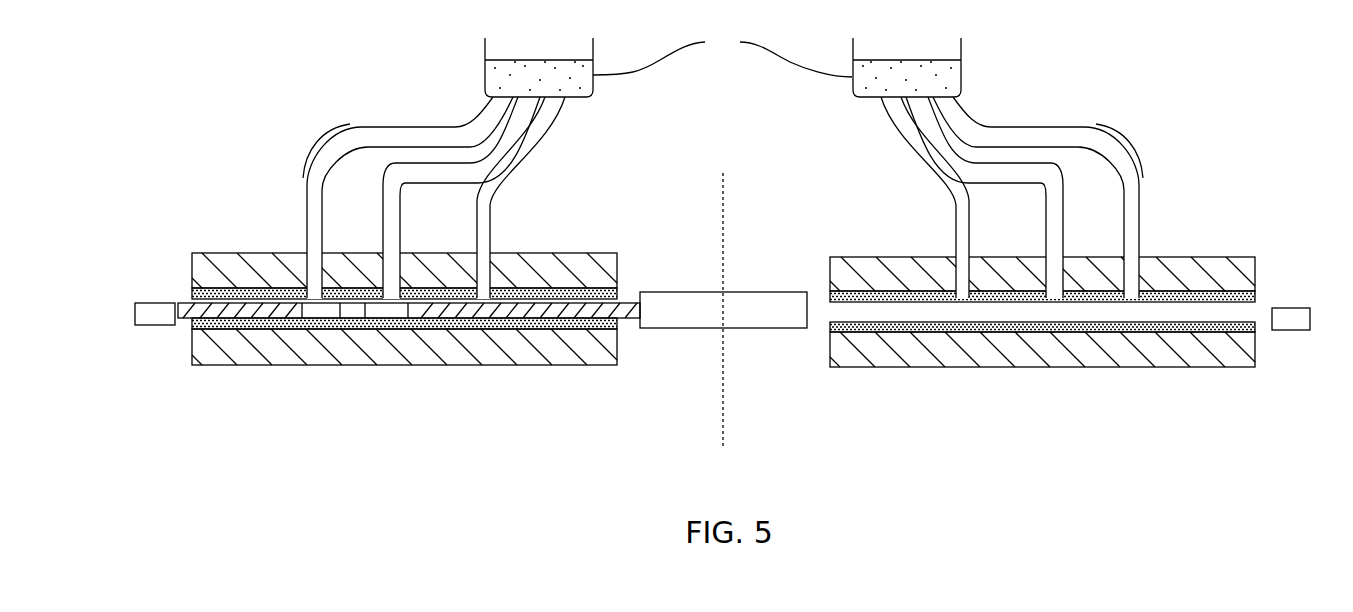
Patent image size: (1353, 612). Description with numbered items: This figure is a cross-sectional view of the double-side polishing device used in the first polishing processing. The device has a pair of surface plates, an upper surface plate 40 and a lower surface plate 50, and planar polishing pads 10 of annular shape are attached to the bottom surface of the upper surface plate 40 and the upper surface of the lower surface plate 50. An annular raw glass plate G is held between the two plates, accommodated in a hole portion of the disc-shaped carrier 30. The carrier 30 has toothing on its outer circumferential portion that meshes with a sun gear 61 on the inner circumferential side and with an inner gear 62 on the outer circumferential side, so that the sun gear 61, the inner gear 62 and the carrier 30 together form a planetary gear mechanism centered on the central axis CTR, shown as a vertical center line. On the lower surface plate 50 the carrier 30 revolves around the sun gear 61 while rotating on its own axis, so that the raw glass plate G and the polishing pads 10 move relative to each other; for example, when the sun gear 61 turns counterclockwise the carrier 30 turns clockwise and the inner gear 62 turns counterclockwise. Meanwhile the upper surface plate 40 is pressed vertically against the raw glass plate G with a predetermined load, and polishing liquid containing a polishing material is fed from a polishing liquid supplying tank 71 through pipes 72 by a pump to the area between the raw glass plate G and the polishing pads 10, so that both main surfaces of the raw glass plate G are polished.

The polishing pad 10 is at (565, 290).
The carrier 30 is at (510, 320).
The upper surface plate 40 is at (252, 253).
The lower surface plate 50 is at (280, 365).
The sun gear 61 is at (763, 314).
The inner gear 62 is at (155, 326).
The polishing liquid supplying tank 71 is at (723, 64).
The pipe 72 is at (424, 127).
The raw glass plate G is at (325, 330).
The central axis CTR is at (723, 297).